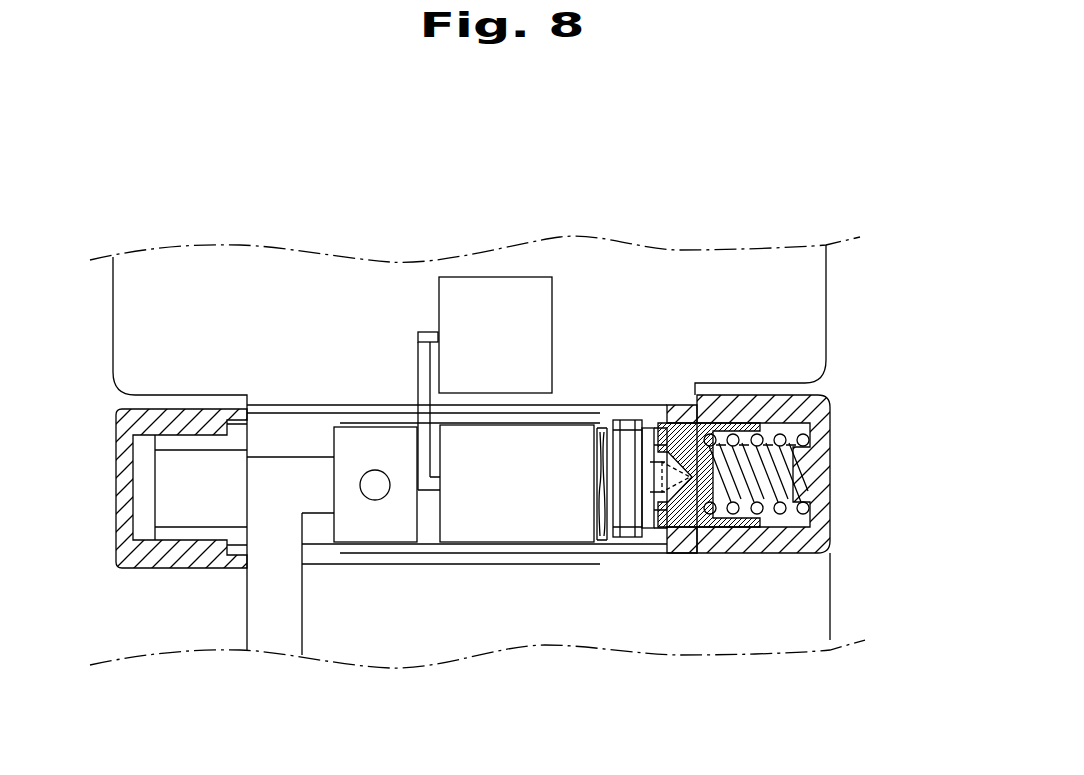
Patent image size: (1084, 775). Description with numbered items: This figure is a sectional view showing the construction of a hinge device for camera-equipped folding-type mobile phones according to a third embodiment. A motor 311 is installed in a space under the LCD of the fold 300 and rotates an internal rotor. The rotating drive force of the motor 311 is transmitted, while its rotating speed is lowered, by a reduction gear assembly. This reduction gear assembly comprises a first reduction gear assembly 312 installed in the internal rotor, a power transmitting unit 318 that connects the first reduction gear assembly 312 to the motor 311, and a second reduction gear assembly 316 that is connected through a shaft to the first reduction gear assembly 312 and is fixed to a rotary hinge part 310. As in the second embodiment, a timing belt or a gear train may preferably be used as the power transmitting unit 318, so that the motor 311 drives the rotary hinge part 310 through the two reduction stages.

The fold 300 is at (212, 263).
The rotary hinge part 310 is at (668, 403).
The motor 311 is at (483, 285).
The first reduction gear assembly 312 is at (490, 530).
The second reduction gear assembly 316 is at (628, 545).
The power transmitting unit 318 is at (420, 352).